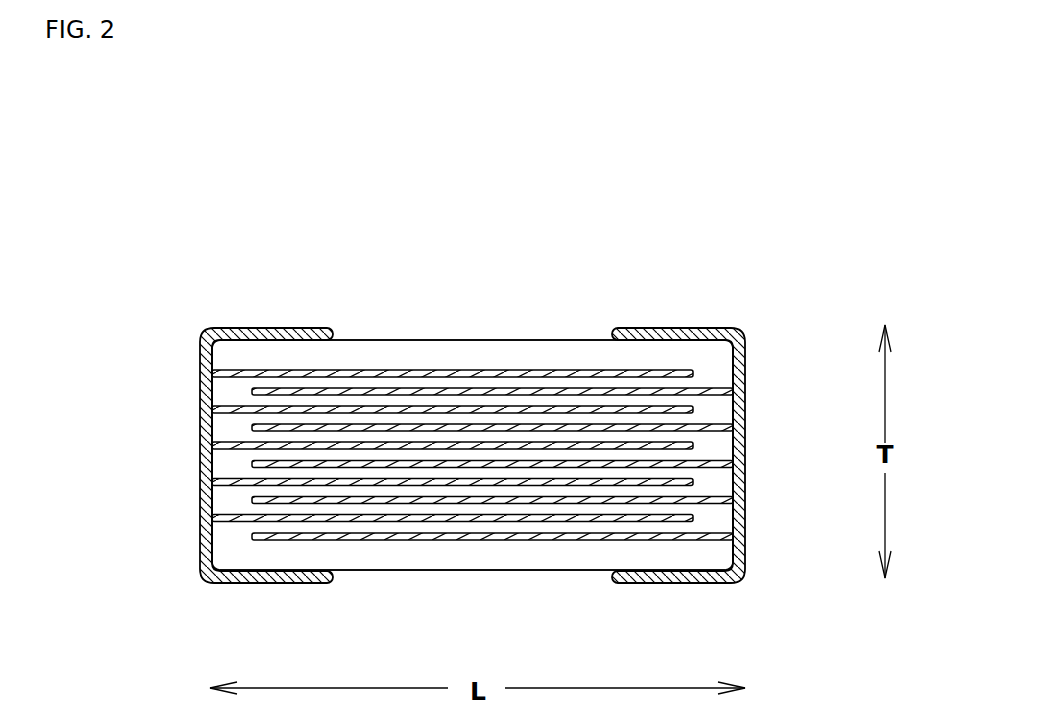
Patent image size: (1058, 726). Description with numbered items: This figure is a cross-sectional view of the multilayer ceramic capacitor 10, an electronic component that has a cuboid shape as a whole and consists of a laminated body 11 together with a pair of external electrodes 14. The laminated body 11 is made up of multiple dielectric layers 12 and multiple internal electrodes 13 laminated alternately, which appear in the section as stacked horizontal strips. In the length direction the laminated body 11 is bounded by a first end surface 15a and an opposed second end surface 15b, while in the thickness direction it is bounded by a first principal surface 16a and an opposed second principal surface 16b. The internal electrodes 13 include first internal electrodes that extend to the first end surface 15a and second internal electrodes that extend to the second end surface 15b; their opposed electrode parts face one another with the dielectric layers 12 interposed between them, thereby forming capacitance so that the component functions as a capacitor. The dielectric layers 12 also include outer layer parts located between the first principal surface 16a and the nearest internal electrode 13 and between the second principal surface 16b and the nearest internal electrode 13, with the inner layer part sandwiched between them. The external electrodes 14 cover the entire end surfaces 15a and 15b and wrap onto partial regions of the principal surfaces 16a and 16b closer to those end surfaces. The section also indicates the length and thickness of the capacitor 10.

The multilayer ceramic capacitor 10 is at (657, 253).
The laminated body 11 is at (445, 216).
The dielectric layers 12 is at (482, 342).
The internal electrodes 13 is at (528, 368).
The external electrodes 14 is at (203, 470).
The first end surface 15a is at (202, 393).
The second end surface 15b is at (745, 383).
The first principal surface 16a is at (373, 338).
The second principal surface 16b is at (416, 575).